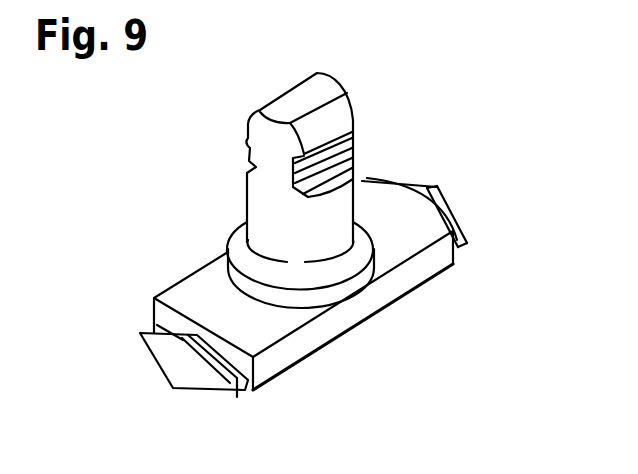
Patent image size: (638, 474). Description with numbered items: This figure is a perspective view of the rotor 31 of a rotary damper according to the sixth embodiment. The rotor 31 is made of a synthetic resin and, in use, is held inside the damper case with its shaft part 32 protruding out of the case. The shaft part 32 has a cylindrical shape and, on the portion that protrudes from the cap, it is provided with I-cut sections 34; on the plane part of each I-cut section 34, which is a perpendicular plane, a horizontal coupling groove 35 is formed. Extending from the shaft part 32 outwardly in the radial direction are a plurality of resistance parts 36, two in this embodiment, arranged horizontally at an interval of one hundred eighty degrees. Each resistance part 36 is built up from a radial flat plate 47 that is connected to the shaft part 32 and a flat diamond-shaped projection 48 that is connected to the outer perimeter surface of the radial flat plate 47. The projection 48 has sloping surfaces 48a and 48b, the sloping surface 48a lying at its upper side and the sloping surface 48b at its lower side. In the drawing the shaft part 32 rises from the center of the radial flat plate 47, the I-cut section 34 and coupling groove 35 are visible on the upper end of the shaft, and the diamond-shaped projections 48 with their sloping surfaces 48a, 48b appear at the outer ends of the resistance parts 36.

The rotor 31 is at (213, 228).
The shaft part 32 is at (288, 105).
The I-cut section 34 is at (346, 180).
The horizontal coupling groove 35 is at (347, 146).
The resistance part 36 is at (408, 280).
The radial flat plate 47 is at (339, 312).
The flat diamond-shaped projection 48 is at (170, 365).
The sloping surface 48a is at (157, 333).
The sloping surface 48b is at (212, 394).